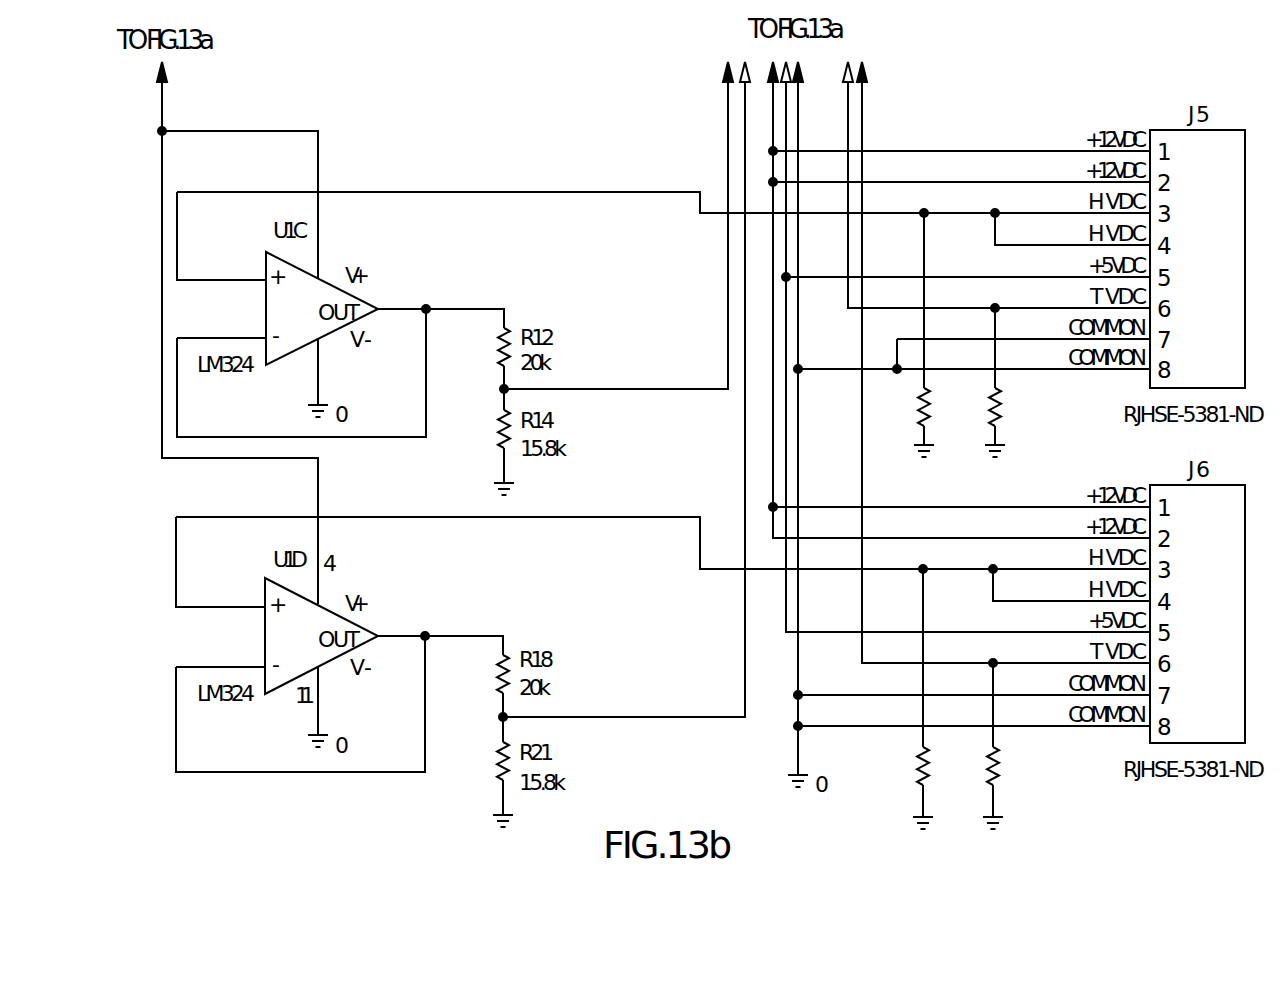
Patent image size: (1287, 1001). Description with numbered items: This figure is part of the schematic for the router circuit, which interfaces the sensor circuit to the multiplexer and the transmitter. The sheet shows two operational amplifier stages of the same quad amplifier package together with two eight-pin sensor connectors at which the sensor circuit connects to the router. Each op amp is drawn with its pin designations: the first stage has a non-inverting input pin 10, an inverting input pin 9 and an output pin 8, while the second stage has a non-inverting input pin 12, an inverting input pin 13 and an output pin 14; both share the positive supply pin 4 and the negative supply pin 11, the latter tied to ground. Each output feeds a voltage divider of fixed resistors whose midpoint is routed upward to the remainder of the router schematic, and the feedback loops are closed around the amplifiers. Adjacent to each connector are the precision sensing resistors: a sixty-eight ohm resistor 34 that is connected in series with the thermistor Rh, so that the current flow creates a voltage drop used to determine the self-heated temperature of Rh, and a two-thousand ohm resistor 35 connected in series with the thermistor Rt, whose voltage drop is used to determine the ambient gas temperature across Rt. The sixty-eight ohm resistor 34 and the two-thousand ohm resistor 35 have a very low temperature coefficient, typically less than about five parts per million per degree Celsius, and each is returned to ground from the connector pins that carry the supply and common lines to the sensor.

The 68 ohm resistor 34 is at (930, 415).
The 2000 ohm resistor 35 is at (1000, 415).
The op-amp U1C output pin 8 is at (385, 308).
The op-amp U1D output pin 14 is at (384, 636).
The op-amp V+ supply pin 4 is at (327, 239).
The op-amp V- supply pin 11 is at (311, 377).
The op-amp U1C non-inverting input 10 is at (233, 266).
The op-amp U1C inverting input 9 is at (233, 323).
The op-amp U1D non-inverting input 12 is at (232, 595).
The op-amp U1D inverting input 13 is at (232, 654).